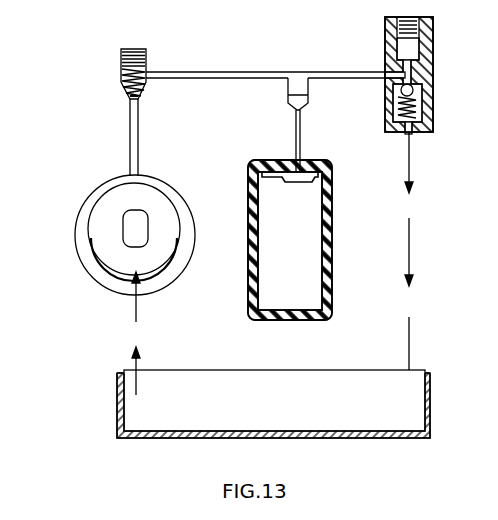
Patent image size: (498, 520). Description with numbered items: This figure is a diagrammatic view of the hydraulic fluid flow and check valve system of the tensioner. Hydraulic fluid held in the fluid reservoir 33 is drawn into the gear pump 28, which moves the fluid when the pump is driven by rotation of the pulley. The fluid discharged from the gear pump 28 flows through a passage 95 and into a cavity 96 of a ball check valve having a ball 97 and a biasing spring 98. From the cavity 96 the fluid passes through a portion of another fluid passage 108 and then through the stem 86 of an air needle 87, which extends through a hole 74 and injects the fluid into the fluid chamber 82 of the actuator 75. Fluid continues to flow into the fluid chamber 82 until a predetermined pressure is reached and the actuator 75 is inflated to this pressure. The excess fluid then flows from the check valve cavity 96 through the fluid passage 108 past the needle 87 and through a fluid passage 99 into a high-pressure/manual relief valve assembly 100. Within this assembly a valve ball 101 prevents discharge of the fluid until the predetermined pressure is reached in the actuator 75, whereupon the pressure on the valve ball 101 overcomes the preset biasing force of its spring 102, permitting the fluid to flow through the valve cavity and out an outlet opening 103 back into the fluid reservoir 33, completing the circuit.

The gear pump 28 is at (81, 203).
The fluid reservoir 33 is at (198, 434).
The hole 74 is at (318, 178).
The actuator 75 is at (250, 287).
The fluid chamber 82 is at (300, 262).
The stem 86 is at (296, 145).
The air needle 87 is at (304, 100).
The passage 95 is at (138, 136).
The cavity 96 is at (122, 82).
The ball 97 is at (140, 97).
The biasing spring 98 is at (123, 65).
The fluid passage 99 is at (347, 71).
The high-pressure/manual relief valve assembly 100 is at (433, 40).
The valve ball 101 is at (414, 85).
The spring 102 is at (418, 104).
The outlet opening 103 is at (412, 134).
The fluid passage 108 is at (233, 71).